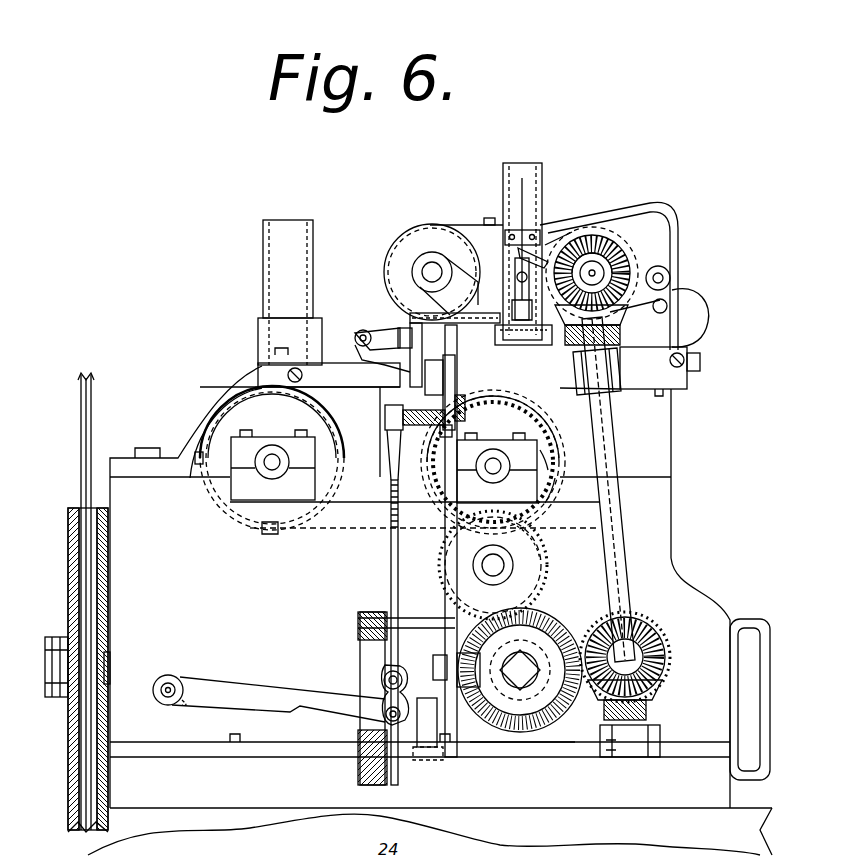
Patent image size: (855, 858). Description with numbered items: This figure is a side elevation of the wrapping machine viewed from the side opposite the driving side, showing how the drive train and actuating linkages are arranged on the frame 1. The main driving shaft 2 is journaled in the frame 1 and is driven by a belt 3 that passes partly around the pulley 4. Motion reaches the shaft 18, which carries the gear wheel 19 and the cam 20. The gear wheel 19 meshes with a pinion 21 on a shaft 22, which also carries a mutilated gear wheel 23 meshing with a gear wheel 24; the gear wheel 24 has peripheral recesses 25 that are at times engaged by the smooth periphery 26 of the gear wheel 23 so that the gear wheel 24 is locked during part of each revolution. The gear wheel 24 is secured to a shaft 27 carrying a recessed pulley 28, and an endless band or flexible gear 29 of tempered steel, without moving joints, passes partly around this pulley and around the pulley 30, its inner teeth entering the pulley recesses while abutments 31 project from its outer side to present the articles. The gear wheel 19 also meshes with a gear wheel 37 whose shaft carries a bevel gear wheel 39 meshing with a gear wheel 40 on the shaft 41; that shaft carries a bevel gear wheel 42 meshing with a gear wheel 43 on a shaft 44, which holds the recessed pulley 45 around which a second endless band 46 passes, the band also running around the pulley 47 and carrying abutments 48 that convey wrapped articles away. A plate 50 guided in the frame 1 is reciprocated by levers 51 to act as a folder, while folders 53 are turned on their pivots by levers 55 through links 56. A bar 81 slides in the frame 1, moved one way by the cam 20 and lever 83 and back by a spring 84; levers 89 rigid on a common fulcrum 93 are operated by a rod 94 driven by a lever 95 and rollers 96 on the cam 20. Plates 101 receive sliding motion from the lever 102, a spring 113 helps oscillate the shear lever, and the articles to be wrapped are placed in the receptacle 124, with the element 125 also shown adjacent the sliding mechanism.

The frame 1 is at (430, 610).
The main driving shaft 2 is at (112, 670).
The belt 3 is at (86, 591).
The pulley 4 is at (68, 548).
The shaft 18 is at (528, 655).
The gear wheel 19 is at (545, 600).
The cam 20 is at (570, 722).
The pinion 21 is at (540, 526).
The shaft 22 is at (490, 566).
The mutilated gear wheel 23 is at (540, 560).
The gear wheel 24 is at (525, 430).
The peripheral recesses 25 is at (548, 450).
The smooth periphery 26 is at (445, 592).
The shaft 27 is at (493, 462).
The pulley 28 is at (556, 482).
The endless band or flexible gear 29 is at (360, 530).
The pulley 30 is at (267, 458).
The abutments or projecting pieces 31 is at (195, 455).
The gear wheel 37 is at (662, 650).
The bevel gear wheel 39 is at (668, 663).
The gear wheel 40 is at (660, 695).
The shaft 41 is at (626, 560).
The bevel gear wheel 42 is at (640, 270).
The gear wheel 43 is at (612, 265).
The shaft 44 is at (600, 255).
The pulley 45 is at (580, 250).
The endless band or flexible gear 46 is at (455, 225).
The pulley 47 is at (405, 250).
The projections or abutments 48 is at (488, 218).
The plate 50 is at (410, 325).
The levers 51 is at (355, 343).
The folders 53 is at (525, 340).
The levers 55 is at (556, 240).
The links 56 is at (512, 270).
The bar 81 is at (436, 365).
The lever 83 is at (445, 644).
The spring 84 is at (360, 658).
The lever 89 is at (462, 394).
The fulcrum 93 is at (455, 425).
The rod 94 is at (391, 590).
The lever 95 is at (270, 695).
The rollers 96 is at (522, 678).
The plates 101 is at (516, 175).
The lever 102 is at (620, 210).
The spring 113 is at (700, 320).
The receptacle 124 is at (329, 303).
The bar 125 is at (452, 358).